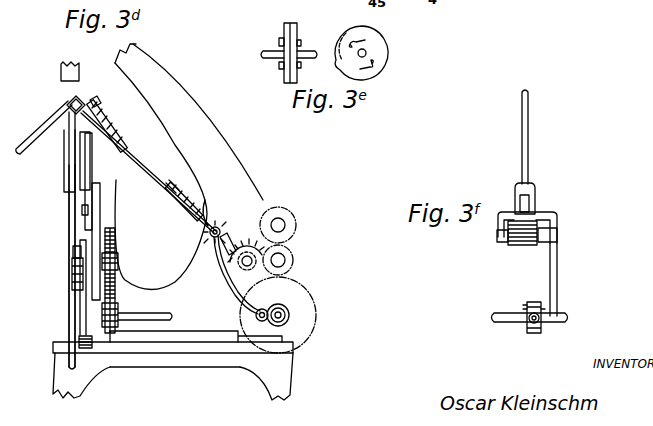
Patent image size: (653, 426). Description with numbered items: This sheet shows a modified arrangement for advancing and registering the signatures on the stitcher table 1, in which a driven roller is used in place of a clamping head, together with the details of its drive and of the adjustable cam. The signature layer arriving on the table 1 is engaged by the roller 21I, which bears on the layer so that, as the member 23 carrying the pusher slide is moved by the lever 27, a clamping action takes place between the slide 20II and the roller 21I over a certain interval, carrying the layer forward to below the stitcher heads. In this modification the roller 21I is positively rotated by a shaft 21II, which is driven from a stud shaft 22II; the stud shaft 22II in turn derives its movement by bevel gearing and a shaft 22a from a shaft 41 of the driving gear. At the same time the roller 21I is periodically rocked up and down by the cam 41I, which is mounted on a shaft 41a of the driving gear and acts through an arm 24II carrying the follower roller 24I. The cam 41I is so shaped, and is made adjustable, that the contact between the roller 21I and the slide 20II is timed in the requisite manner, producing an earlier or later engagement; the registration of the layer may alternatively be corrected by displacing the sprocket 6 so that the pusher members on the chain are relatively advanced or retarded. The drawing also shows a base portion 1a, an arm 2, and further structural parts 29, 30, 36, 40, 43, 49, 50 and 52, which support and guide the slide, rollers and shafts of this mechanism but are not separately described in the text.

In FIG. 3D, the table 1 is at (34, 132).
In FIG. 3D, the base plate 1a is at (58, 347).
In FIG. 3D, the curved arm 2 is at (163, 91).
In FIG. 3D, the sprocket 6 is at (70, 285).
In FIG. 3D, the slide 20II is at (107, 115).
In FIG. 3D, the roller 21I is at (97, 105).
In FIG. 3D, the shaft 21II is at (128, 138).
In FIG. 3F, the shaft 21II is at (523, 139).
In FIG. 3D, the stud shaft 22II is at (205, 200).
In FIG. 3F, the stud shaft 22II is at (514, 243).
In FIG. 3D, the shaft 22a is at (239, 236).
In FIG. 3D, the member 23 is at (72, 148).
In FIG. 3D, the roller 24I is at (258, 317).
In FIG. 3F, the roller 24I is at (541, 324).
In FIG. 3D, the arm 24II is at (220, 248).
In FIG. 3F, the arm 24II is at (558, 268).
In FIG. 3D, the lever 27 is at (89, 162).
In FIG. 3D, the sliding block 29 is at (72, 264).
In FIG. 3D, the stop collar 30 is at (74, 248).
In FIG. 3D, the rod 36 is at (80, 302).
In FIG. 3D, the screw 40 is at (93, 346).
In FIG. 3D, the shaft 41 is at (285, 262).
In FIG. 3D, the cam 41I is at (289, 326).
In FIG. 3F, the cam 41I is at (535, 334).
In FIG. 3D, the shaft 41a is at (286, 310).
In FIG. 3F, the shaft 41a is at (505, 316).
In FIG. 3D, the plate 43 is at (157, 315).
In FIG. 3D, the rack foot 49 is at (118, 306).
In FIG. 3D, the rack 50 is at (117, 248).
In FIG. 3D, the pulley 52 is at (283, 224).